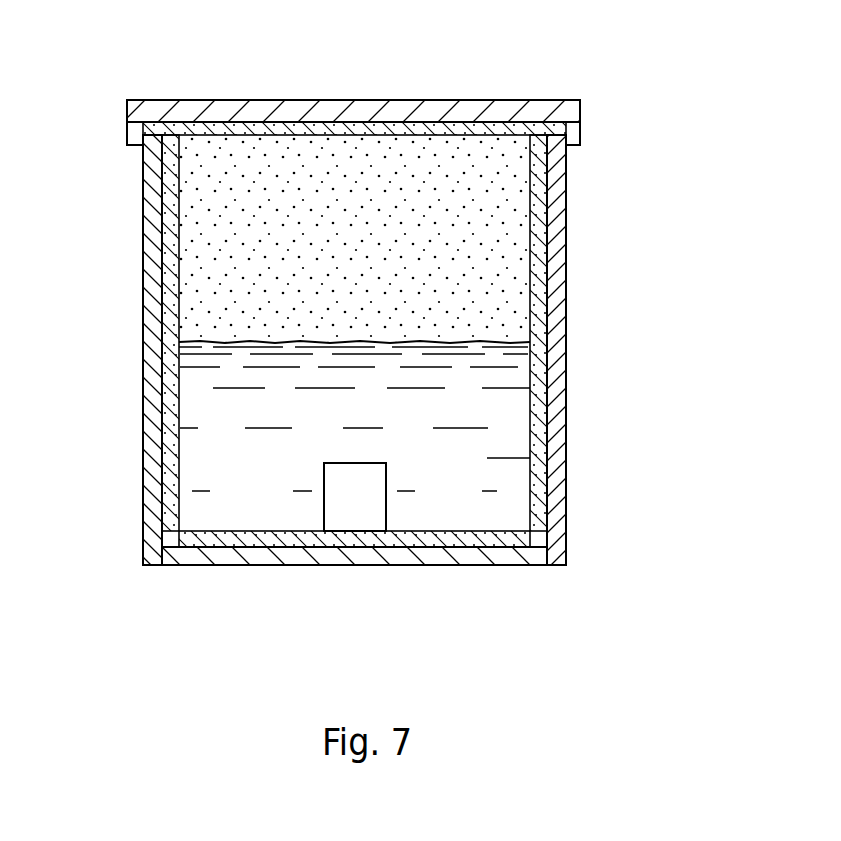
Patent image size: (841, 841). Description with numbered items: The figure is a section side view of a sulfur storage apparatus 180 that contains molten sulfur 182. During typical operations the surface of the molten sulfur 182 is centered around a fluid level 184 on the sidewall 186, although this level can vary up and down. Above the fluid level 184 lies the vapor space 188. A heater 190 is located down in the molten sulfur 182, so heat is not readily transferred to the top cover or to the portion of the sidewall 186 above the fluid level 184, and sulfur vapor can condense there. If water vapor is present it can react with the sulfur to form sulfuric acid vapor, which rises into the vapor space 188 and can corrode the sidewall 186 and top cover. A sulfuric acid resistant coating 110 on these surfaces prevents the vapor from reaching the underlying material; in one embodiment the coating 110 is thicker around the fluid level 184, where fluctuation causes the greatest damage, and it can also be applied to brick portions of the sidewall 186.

The sulfur storage apparatus 180 is at (370, 310).
The sulfuric acid resistant coating 110 is at (187, 218).
The vapor space 188 is at (460, 216).
The fluid level 184 is at (473, 342).
The sidewall 186 is at (163, 430).
The molten sulfur 182 is at (487, 457).
The heater 190 is at (324, 512).